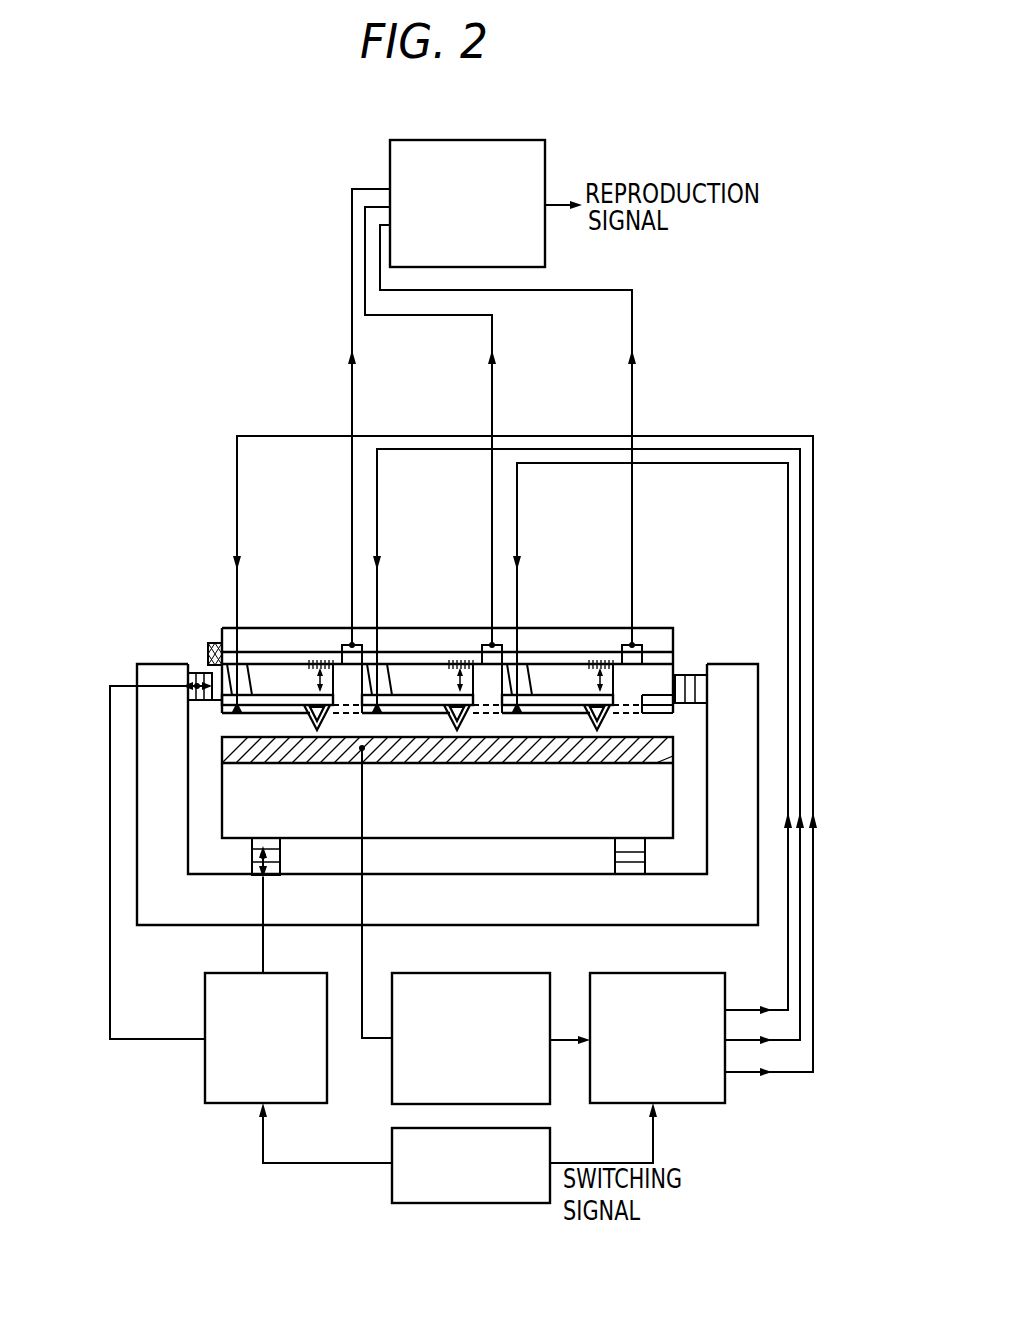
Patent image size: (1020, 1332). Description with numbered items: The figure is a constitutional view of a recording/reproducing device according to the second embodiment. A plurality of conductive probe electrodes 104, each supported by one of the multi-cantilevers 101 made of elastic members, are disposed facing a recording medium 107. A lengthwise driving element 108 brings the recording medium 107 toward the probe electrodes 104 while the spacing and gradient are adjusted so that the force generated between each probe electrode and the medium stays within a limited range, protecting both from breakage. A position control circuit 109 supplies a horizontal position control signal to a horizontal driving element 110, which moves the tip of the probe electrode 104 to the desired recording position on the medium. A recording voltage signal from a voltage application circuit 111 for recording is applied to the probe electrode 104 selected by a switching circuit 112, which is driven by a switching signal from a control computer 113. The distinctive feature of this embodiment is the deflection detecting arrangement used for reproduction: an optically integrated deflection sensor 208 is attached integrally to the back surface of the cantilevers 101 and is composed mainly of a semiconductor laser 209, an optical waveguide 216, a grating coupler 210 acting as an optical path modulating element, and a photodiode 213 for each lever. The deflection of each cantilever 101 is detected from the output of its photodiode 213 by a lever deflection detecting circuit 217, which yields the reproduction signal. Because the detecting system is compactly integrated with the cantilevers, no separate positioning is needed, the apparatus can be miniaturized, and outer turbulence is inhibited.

The cantilever 101 is at (562, 695).
The probe electrode 104 is at (597, 732).
The recording medium 107 is at (222, 752).
The lengthwise driving element 108 is at (252, 862).
The position control circuit 109 is at (217, 1106).
The horizontal driving element 110 is at (207, 673).
The voltage application circuit for recording 111 is at (392, 1090).
The switching circuit 112 is at (683, 1103).
The control computer 113 is at (522, 1203).
The optically integrated deflection sensor 208 is at (673, 640).
The semiconductor laser 209 is at (214, 643).
The grating coupler 210 is at (590, 627).
The photodiode 213 is at (642, 650).
The optical waveguide 216 is at (680, 660).
The lever deflection detecting circuit 217 is at (510, 140).